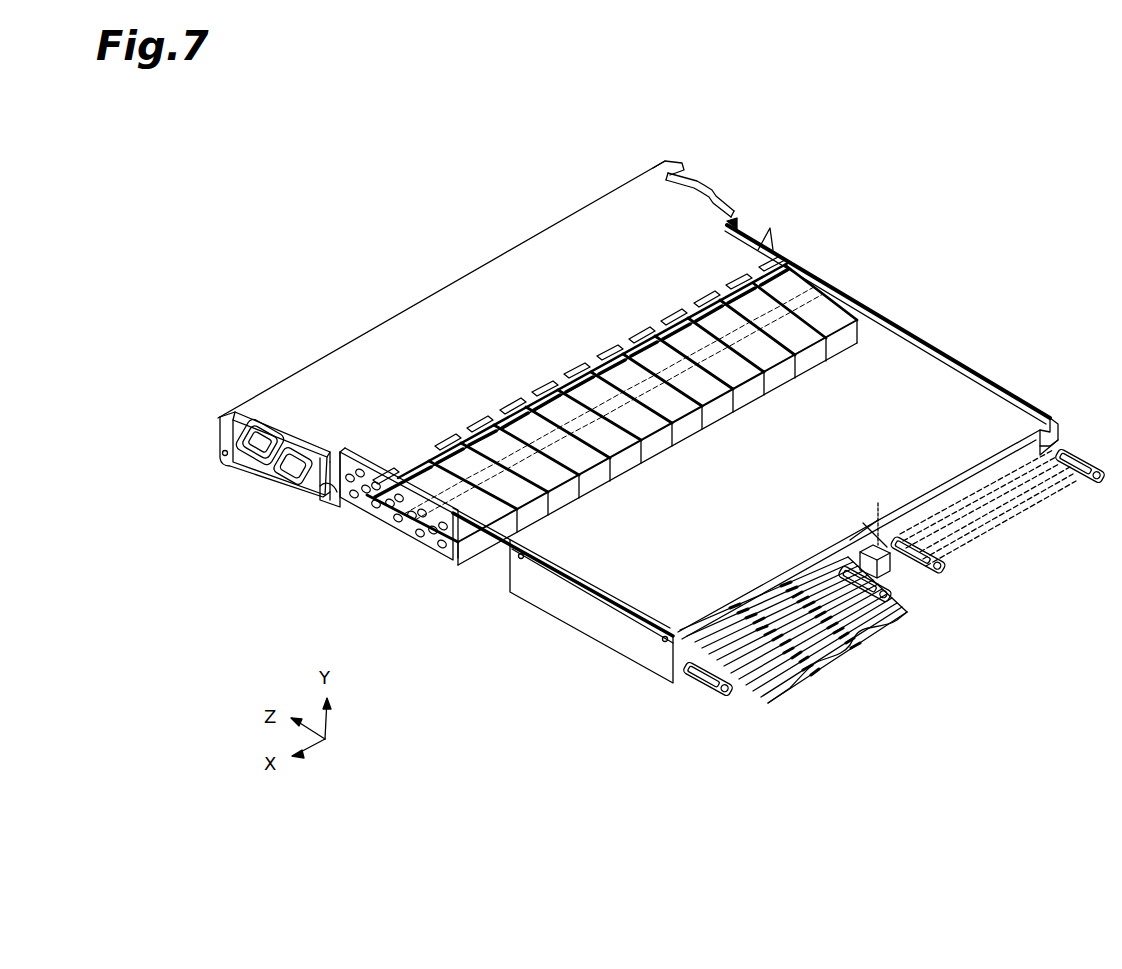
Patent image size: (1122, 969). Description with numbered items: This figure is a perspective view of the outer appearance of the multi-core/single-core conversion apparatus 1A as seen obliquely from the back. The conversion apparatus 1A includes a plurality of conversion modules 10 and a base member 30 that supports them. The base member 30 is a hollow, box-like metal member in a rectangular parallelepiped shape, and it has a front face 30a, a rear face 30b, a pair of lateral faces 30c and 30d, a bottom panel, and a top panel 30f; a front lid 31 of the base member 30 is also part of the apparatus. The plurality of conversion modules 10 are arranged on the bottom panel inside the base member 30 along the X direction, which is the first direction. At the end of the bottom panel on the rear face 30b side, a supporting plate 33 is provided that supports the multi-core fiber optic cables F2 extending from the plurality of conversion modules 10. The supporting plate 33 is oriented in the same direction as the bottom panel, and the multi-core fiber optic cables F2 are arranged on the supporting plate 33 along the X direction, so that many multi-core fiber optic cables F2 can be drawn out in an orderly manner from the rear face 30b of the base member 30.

The multi-core/single-core conversion apparatus 1A is at (893, 175).
The conversion module 10 is at (463, 493).
The base member 30 is at (463, 573).
The front face 30a is at (430, 295).
The rear face 30b is at (890, 540).
The lateral face 30c is at (514, 578).
The lateral face 30d is at (933, 350).
The top panel 30f is at (985, 410).
The front lid 31 is at (627, 207).
The supporting plate 33 is at (990, 503).
The multi-core fiber optic cable F2 is at (768, 690).